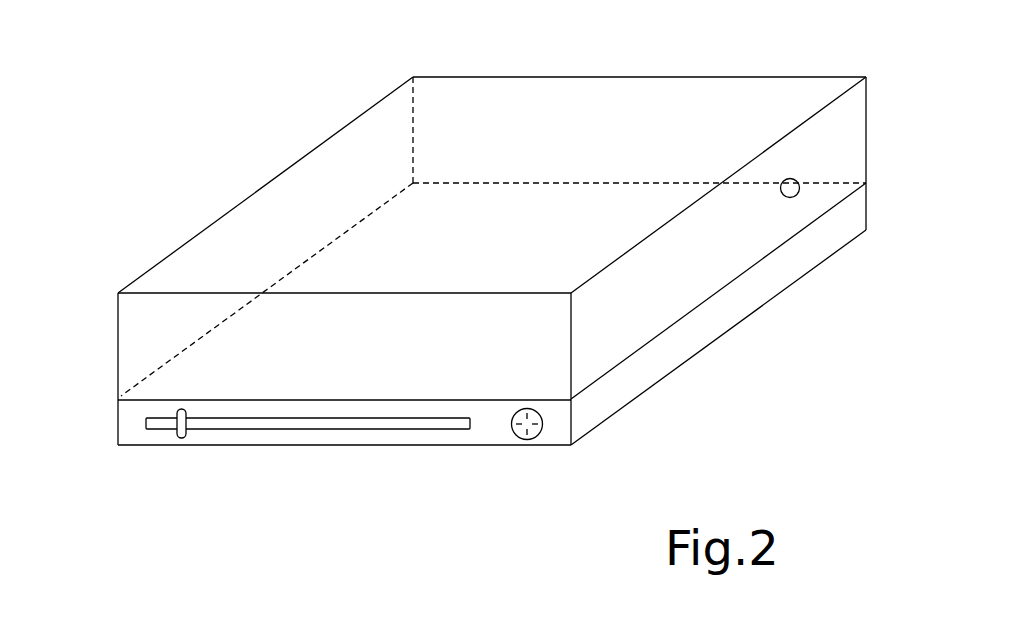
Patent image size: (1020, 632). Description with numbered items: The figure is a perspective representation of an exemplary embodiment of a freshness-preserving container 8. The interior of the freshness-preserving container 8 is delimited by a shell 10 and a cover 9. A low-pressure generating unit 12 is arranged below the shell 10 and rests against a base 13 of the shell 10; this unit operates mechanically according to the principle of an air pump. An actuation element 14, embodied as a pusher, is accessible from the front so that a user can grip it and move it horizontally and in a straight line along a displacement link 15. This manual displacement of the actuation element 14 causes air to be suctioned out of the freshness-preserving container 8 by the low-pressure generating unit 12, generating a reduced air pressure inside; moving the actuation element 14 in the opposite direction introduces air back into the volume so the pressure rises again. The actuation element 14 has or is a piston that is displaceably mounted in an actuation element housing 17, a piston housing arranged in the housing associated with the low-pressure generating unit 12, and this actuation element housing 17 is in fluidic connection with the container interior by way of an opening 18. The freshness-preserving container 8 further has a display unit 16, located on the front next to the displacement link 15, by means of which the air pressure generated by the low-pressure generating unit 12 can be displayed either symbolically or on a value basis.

The freshness-preserving container 8 is at (826, 278).
The cover 9 is at (275, 188).
The shell 10 is at (110, 336).
The low-pressure generating unit 12 is at (563, 457).
The base 13 is at (393, 376).
The actuation element 14 is at (166, 448).
The displacement link 15 is at (236, 444).
The display unit 16 is at (503, 446).
The actuation element housing 17 is at (705, 362).
The opening 18 is at (799, 168).